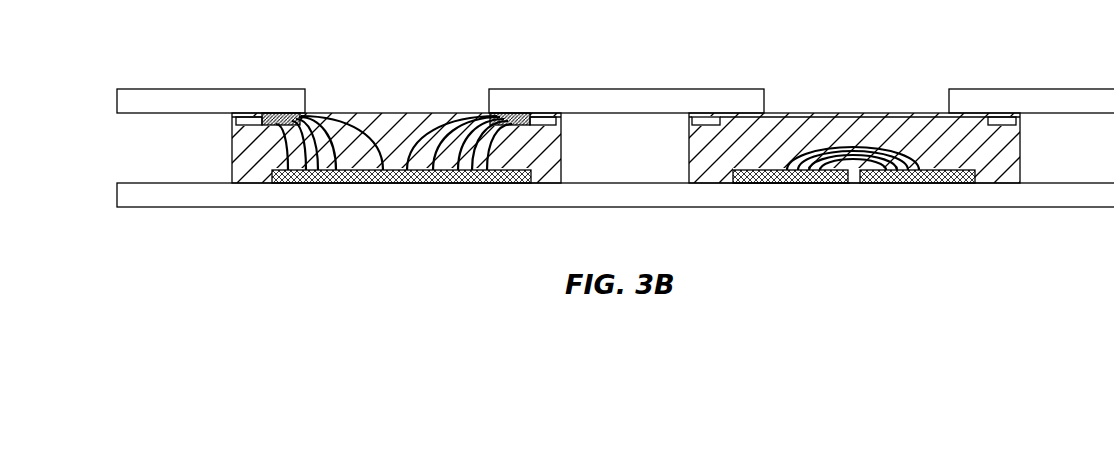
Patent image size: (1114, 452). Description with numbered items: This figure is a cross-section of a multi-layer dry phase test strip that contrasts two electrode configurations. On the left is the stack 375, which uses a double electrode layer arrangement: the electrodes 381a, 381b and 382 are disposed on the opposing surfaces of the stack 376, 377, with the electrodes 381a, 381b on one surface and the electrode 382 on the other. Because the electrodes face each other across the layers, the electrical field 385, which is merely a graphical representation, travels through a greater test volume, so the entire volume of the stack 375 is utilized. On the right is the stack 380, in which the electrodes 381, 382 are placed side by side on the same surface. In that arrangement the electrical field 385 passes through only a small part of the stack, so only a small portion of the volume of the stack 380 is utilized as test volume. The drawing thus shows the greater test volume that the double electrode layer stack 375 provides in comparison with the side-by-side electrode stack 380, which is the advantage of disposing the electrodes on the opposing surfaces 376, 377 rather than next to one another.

The stack 375 is at (400, 115).
The stack surface 376 is at (215, 90).
The stack surface 377 is at (158, 196).
The stack 380 is at (840, 115).
The electrode 381 is at (790, 183).
The electrode 381a is at (236, 119).
The electrode 381b is at (541, 113).
The electrode 382 is at (405, 172).
The electrical field 385 is at (298, 152).